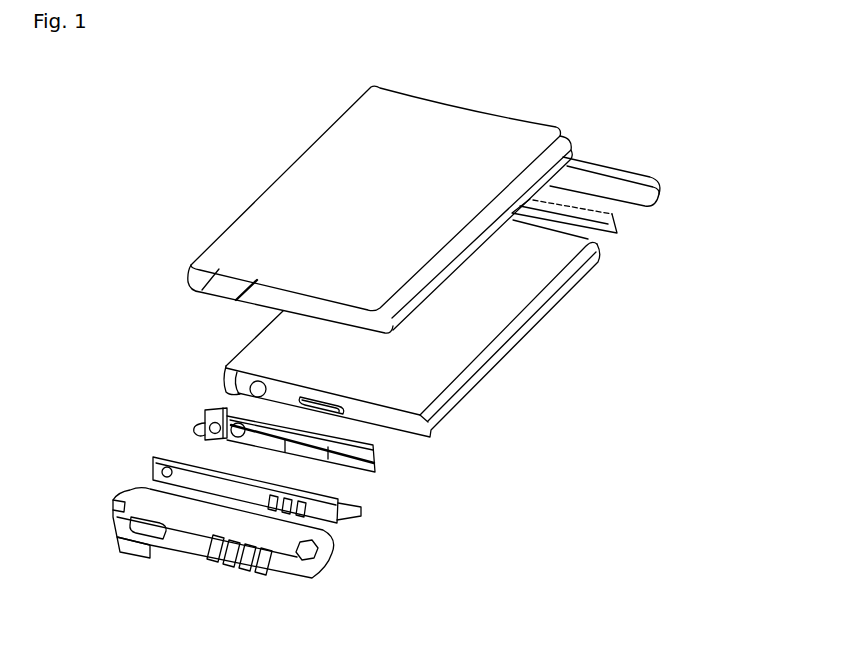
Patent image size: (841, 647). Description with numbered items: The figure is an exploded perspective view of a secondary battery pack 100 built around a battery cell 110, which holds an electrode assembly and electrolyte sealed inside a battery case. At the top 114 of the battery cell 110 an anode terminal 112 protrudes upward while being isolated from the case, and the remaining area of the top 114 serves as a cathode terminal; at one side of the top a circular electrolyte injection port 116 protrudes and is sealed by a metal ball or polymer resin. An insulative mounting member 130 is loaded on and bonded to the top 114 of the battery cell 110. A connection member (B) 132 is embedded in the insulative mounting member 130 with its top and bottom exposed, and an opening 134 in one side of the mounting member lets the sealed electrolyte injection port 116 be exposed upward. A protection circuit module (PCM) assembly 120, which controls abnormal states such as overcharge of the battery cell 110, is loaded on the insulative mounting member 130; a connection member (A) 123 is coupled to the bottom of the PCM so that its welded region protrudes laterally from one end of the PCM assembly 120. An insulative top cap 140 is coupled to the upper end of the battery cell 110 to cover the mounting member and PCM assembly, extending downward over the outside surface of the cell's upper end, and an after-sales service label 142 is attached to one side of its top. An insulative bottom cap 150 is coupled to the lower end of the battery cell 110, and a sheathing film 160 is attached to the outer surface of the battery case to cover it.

The secondary battery pack 100 is at (113, 78).
The battery cell 110 is at (575, 294).
The anode terminal 112 is at (373, 417).
The top 114 is at (440, 418).
The electrolyte injection port 116 is at (220, 372).
The protection circuit module (PCM) assembly 120 is at (248, 512).
The connection member (A) 123 is at (354, 510).
The insulative mounting member 130 is at (291, 456).
The connection member (B) 132 is at (257, 447).
The opening 134 is at (205, 406).
The top cap 140 is at (249, 561).
The after-sales service (A/S) label 142 is at (120, 546).
The insulative bottom cap 150 is at (617, 165).
The sheathing film 160 is at (210, 258).